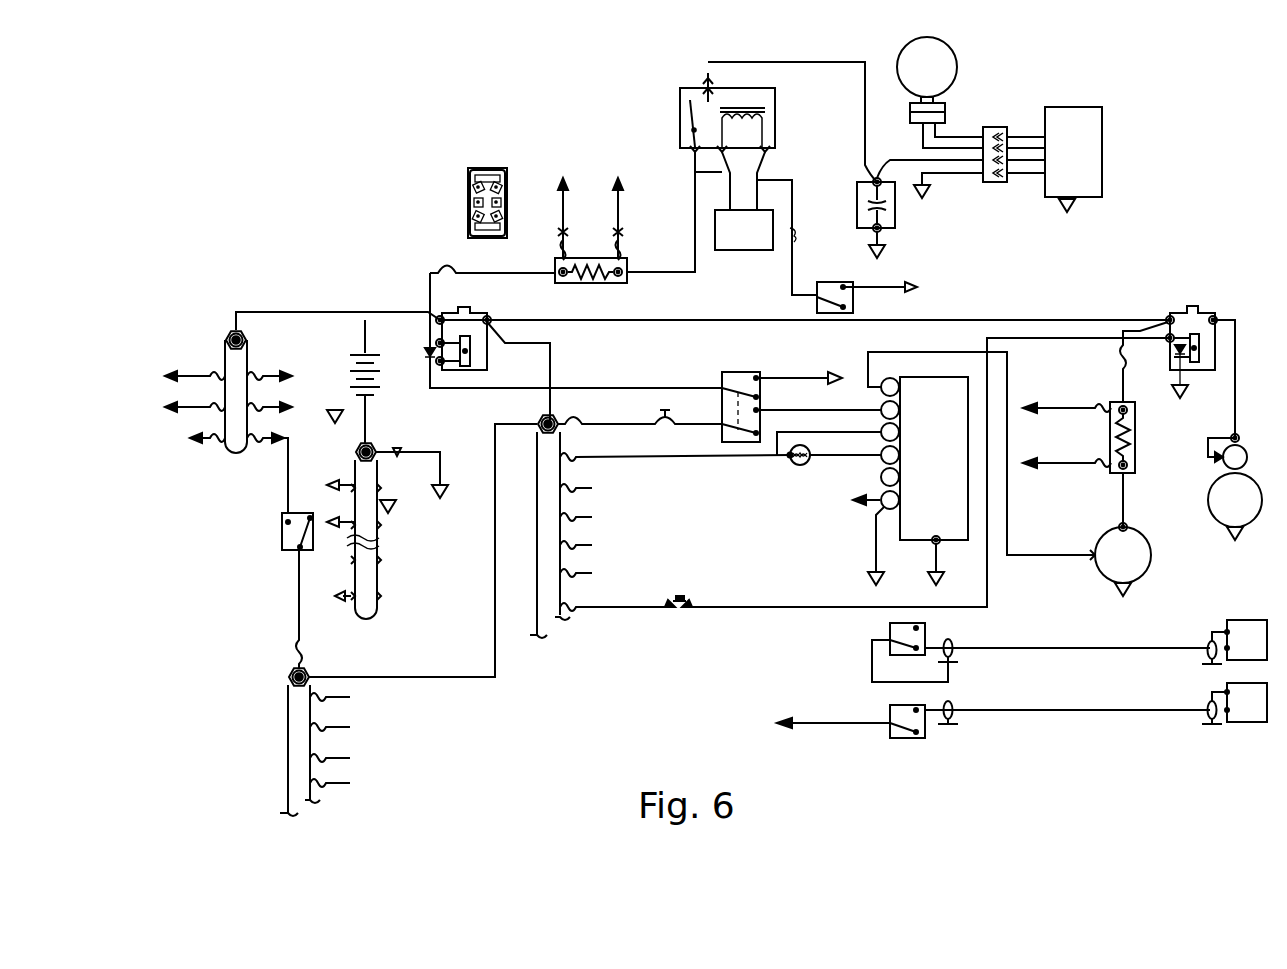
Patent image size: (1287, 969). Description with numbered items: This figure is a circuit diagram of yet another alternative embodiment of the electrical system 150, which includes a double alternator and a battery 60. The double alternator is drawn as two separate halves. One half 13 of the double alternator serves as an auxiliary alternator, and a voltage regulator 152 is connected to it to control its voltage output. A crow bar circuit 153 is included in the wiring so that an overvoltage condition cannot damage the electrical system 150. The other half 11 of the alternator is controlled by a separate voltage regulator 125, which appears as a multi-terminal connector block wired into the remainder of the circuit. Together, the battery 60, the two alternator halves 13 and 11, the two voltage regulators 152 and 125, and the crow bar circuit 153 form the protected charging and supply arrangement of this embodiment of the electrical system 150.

The electrical system 150 is at (451, 117).
The battery 60 is at (355, 367).
The crow bar circuit 153 is at (748, 240).
The half of the double alternator 13 is at (916, 78).
The voltage regulator 152 is at (1068, 130).
The voltage regulator 125 is at (921, 473).
The other half of the alternator 11 is at (1112, 566).